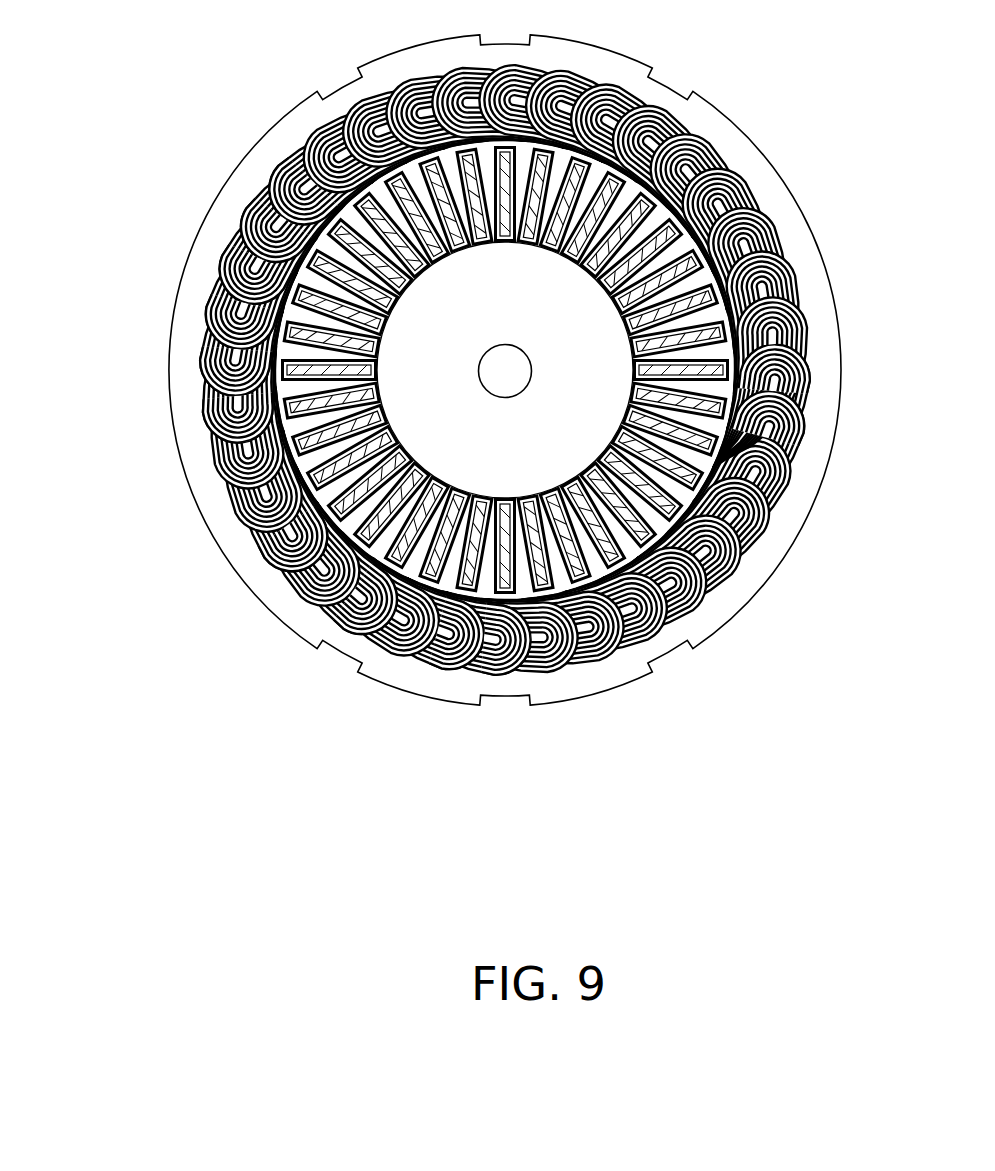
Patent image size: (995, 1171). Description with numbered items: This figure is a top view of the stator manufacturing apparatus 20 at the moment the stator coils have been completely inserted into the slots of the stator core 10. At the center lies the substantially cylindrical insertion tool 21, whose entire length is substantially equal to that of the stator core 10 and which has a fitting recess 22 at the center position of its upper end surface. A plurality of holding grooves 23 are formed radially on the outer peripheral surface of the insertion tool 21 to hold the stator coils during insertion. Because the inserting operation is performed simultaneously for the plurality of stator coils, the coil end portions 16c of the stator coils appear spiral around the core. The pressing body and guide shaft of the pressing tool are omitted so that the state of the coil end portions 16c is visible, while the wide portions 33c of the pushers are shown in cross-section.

The stator core 10 is at (751, 108).
The coil end portion 16c is at (288, 135).
The stator manufacturing apparatus 20 is at (275, 337).
The insertion tool 21 is at (227, 473).
The fitting recess 22 is at (523, 363).
The holding groove 23 is at (258, 557).
The wide portion 33c is at (430, 600).